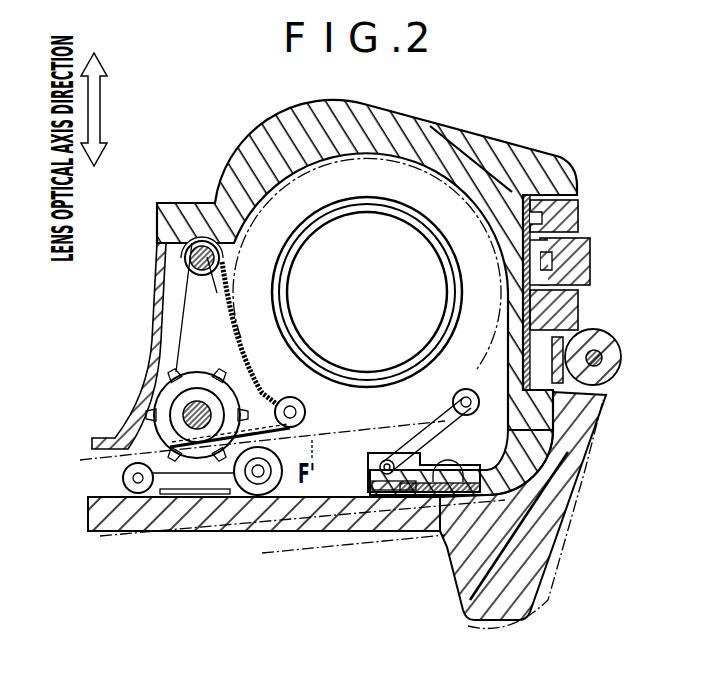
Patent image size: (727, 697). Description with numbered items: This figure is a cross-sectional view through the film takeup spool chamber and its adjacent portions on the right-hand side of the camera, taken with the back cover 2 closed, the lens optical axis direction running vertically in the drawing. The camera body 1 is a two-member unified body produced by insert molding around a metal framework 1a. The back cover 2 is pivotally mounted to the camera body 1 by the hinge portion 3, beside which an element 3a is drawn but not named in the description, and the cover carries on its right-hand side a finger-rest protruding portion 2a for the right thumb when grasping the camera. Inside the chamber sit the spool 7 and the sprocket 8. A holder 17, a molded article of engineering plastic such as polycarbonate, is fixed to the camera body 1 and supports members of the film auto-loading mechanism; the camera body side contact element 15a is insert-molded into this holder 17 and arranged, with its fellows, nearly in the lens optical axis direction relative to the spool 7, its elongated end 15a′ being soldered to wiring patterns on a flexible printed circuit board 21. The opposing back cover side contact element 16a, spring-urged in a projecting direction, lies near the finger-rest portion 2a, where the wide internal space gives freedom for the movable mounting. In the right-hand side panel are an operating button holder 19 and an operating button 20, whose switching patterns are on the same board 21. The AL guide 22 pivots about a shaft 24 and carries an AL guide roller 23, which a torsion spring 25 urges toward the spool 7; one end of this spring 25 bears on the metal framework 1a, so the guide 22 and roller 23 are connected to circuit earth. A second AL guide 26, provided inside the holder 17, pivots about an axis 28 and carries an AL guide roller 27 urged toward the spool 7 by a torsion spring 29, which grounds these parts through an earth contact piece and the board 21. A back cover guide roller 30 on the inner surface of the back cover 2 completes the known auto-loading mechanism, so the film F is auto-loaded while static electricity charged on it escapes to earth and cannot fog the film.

The camera body 1 is at (470, 180).
The metal framework 1a is at (157, 257).
The back cover 2 is at (181, 508).
The finger-rest protruding portion 2a is at (550, 580).
The hinge portion 3 is at (560, 375).
The pivot pin 3a is at (600, 358).
The spool 7 is at (440, 180).
The sprocket 8 is at (170, 393).
The camera body side contact element 15a is at (458, 490).
The elongated end of camera body side contact element 15a′ is at (545, 318).
The back cover side contact element 16a is at (462, 495).
The holder 17 is at (537, 442).
The operating button holder 19 is at (560, 212).
The operating button 20 is at (563, 255).
The flexible printed circuit board 21 is at (522, 212).
The AL guide 22 is at (226, 331).
The AL guide roller 23 is at (292, 404).
The shaft 24 is at (201, 240).
The torsion spring 25 is at (217, 300).
The AL guide 26 is at (415, 445).
The AL guide roller 27 is at (465, 389).
The axis 28 is at (372, 466).
The torsion spring 29 is at (400, 452).
The back cover guide roller 30 is at (124, 479).